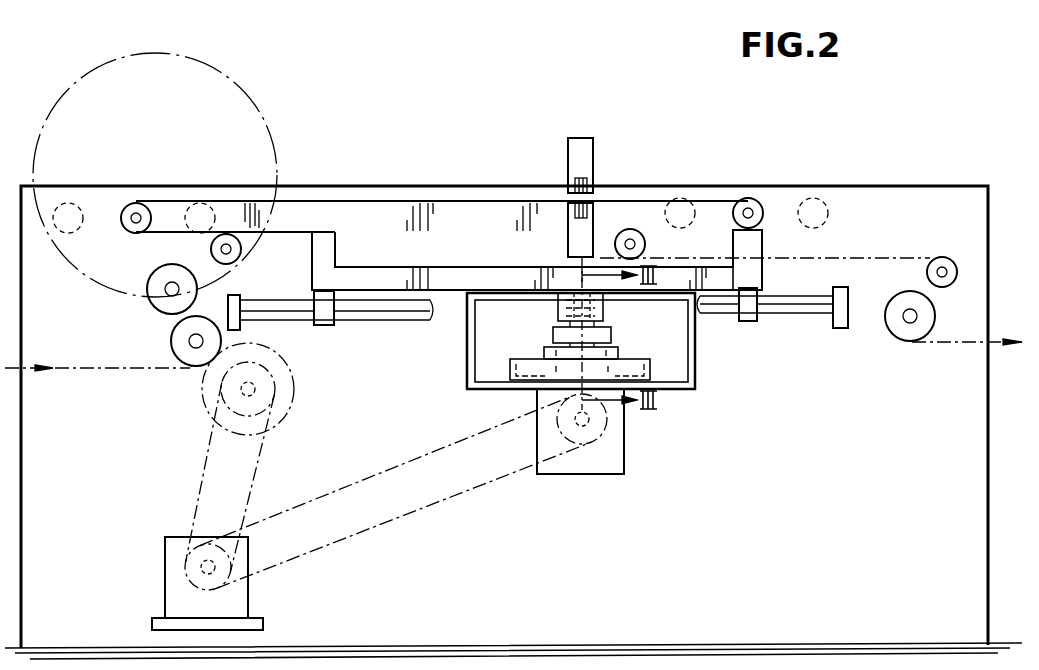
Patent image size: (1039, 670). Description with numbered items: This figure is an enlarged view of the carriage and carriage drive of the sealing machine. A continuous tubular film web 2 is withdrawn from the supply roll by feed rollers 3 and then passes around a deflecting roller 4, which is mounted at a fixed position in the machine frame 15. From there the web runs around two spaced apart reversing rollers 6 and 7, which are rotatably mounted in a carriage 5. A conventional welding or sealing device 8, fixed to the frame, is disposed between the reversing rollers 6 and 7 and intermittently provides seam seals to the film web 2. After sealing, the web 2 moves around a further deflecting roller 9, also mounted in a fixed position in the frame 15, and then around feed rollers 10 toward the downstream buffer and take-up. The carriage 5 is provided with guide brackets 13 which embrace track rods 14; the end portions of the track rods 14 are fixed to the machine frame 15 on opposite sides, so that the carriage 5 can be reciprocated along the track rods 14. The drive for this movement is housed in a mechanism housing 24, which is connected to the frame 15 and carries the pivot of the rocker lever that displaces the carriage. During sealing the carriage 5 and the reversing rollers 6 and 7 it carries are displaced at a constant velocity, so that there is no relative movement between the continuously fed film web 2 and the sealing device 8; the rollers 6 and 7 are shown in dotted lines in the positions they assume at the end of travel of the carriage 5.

The tubular film web 2 is at (122, 372).
The feed rollers 3 is at (175, 339).
The deflecting roller 4 is at (234, 251).
The carriage 5 is at (352, 210).
The reversing roller 6 is at (137, 203).
The reversing roller 7 is at (748, 198).
The sealing device 8 is at (583, 235).
The deflecting roller 9 is at (632, 230).
The feed rollers 10 is at (918, 326).
The guide brackets 13 is at (326, 323).
The track rods 14 is at (820, 316).
The machine frame 15 is at (802, 536).
The mechanism housing 24 is at (688, 386).